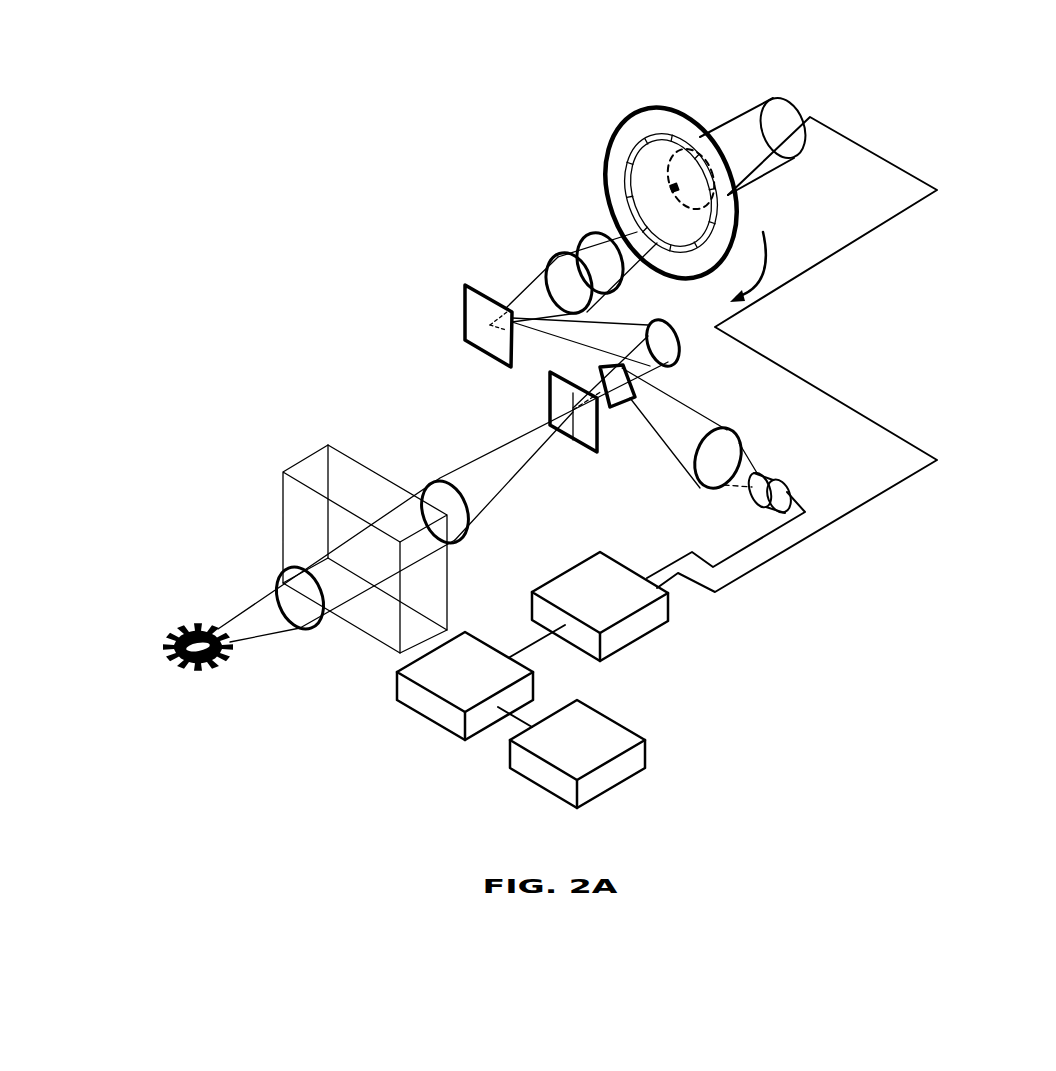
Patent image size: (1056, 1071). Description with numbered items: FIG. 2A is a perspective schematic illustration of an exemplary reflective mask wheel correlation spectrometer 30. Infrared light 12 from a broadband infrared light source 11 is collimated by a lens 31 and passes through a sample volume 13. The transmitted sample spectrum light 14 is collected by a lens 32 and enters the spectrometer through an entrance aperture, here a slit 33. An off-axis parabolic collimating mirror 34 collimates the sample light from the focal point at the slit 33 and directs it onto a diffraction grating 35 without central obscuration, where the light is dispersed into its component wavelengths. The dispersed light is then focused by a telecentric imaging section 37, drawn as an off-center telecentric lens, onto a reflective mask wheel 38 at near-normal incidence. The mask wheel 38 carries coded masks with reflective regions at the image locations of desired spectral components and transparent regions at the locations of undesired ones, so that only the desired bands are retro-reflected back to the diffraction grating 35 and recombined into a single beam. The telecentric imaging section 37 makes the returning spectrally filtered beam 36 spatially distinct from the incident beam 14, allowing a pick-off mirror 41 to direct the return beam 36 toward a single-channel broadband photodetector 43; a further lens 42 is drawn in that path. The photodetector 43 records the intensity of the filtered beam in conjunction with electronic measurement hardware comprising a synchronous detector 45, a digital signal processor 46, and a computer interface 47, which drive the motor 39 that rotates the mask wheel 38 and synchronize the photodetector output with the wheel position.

The reflective mask wheel correlation spectrometer 30 is at (276, 145).
The broadband infrared light source 11 is at (188, 627).
The infrared light 12 is at (265, 633).
The sample volume 13 is at (307, 457).
The transmitted sample spectrum light 14 is at (513, 477).
The lens 31 is at (280, 567).
The lens 32 is at (433, 480).
The slit 33 is at (597, 452).
The off-axis parabolic mirror 34 is at (680, 343).
The diffraction grating 35 is at (462, 317).
The spectrally filtered sample spectrum light beam 36 is at (660, 444).
The telecentric imaging section 37 is at (580, 217).
The reflective mask wheel 38 is at (607, 135).
The motor 39 is at (727, 120).
The pick-off mirror 41 is at (633, 386).
The focusing lens 42 is at (740, 444).
The single-channel broadband photodetector 43 is at (784, 497).
The synchronous detector 45 is at (652, 630).
The digital signal processor (DSP) 46 is at (425, 718).
The computer interface 47 is at (647, 753).